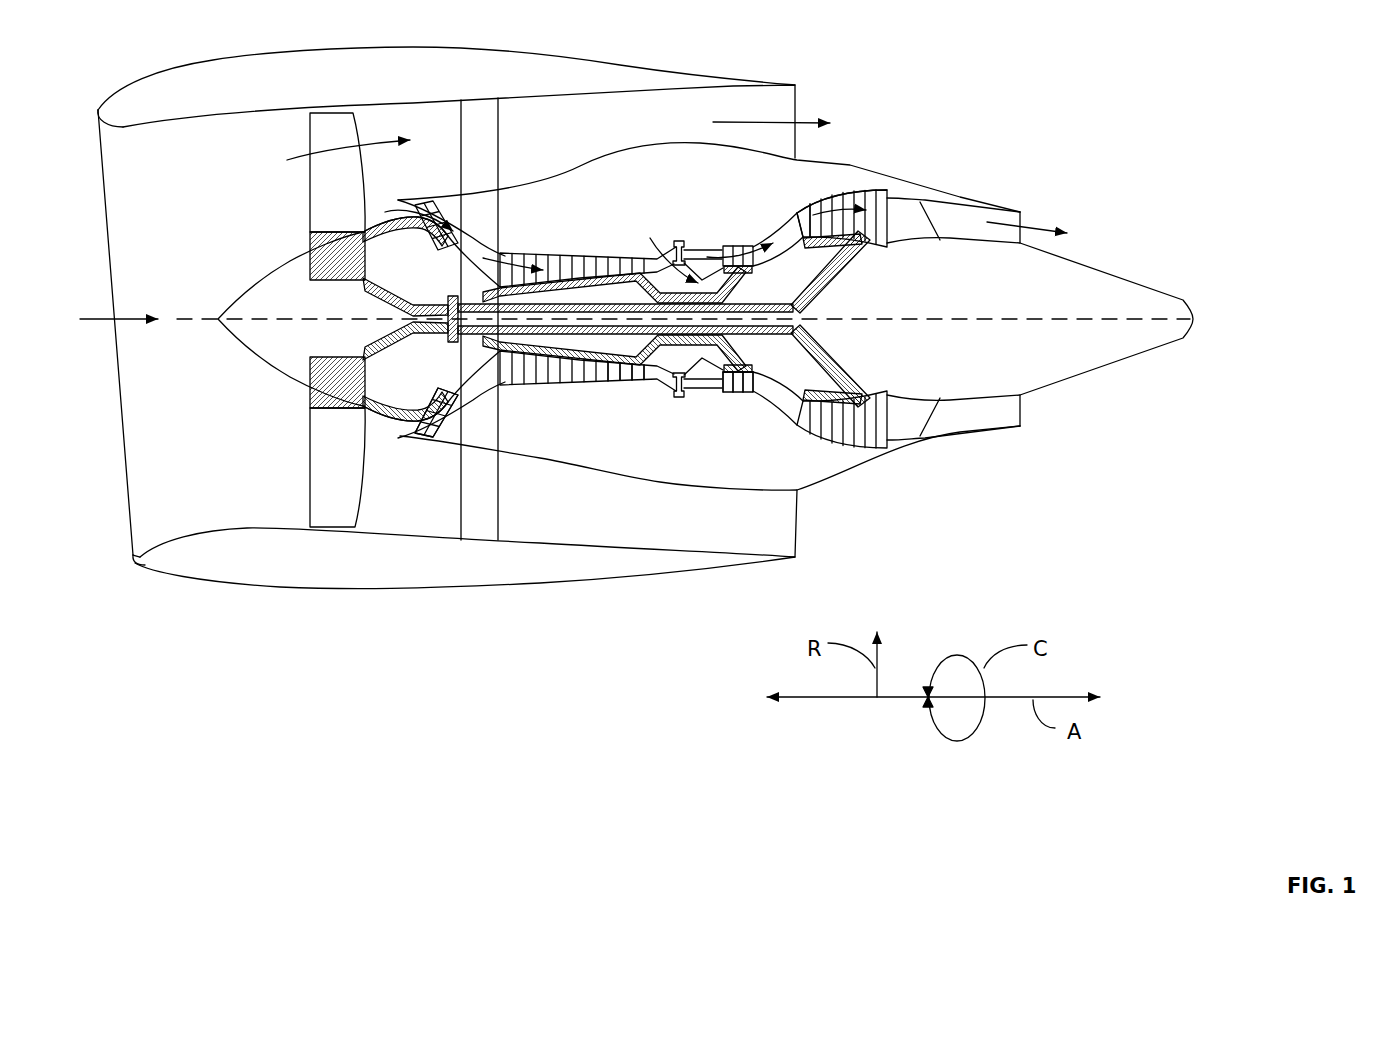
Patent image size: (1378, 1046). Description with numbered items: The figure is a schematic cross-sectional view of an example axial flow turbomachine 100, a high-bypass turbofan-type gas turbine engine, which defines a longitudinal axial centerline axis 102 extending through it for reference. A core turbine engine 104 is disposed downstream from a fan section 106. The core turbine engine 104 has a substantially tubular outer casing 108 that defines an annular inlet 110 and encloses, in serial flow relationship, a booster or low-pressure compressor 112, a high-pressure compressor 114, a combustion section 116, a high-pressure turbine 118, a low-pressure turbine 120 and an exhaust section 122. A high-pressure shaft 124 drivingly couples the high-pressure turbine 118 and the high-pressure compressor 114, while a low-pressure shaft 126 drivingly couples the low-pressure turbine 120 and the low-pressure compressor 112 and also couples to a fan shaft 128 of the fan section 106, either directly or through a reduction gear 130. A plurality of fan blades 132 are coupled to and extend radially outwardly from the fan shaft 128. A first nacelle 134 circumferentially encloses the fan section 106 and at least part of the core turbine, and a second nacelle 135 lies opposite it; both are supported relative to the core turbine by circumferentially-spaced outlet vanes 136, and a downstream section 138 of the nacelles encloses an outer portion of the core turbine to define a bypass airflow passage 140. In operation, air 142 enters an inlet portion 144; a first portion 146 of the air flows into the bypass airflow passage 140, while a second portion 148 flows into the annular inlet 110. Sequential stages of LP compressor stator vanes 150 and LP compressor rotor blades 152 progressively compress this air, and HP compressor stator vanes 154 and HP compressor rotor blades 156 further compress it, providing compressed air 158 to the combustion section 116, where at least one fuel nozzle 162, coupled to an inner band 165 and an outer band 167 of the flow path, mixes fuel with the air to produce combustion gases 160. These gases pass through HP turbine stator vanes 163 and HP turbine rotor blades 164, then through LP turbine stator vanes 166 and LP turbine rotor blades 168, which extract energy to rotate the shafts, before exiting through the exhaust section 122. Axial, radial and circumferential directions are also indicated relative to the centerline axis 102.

The axial flow turbomachine 100 is at (936, 53).
The axial centerline axis 102 is at (943, 317).
The core turbine engine 104 is at (625, 196).
The fan section 106 is at (232, 186).
The outer casing 108 is at (647, 480).
The annular inlet 110 is at (412, 426).
The low-pressure compressor 112 is at (458, 404).
The high-pressure compressor 114 is at (536, 392).
The combustion section 116 is at (694, 395).
The high-pressure turbine 118 is at (765, 377).
The low-pressure turbine 120 is at (881, 447).
The exhaust section 122 is at (1024, 217).
The high-pressure shaft 124 is at (760, 290).
The low-pressure shaft 126 is at (463, 303).
The fan shaft 128 is at (363, 280).
The reduction gear 130 is at (460, 347).
The fan blades 132 is at (310, 455).
The first nacelle 134 is at (352, 590).
The second nacelle 135 is at (364, 50).
The outlet vanes 136 is at (500, 133).
The downstream section 138 is at (702, 56).
The bypass airflow passage 140 is at (645, 135).
The air 142 is at (123, 318).
The inlet portion 144 is at (130, 530).
The first portion of air 146 is at (328, 150).
The second portion of air 148 is at (385, 211).
The LP compressor stator vanes 150 is at (425, 430).
The LP compressor rotor blades 152 is at (440, 434).
The HP compressor stator vanes 154 is at (624, 380).
The HP compressor rotor blades 156 is at (635, 385).
The compressed air 158 is at (663, 249).
The combustion gases 160 is at (737, 247).
The fuel nozzle 162 is at (738, 393).
The HP turbine stator vanes 163 is at (753, 397).
The HP turbine rotor blades 164 is at (741, 366).
The inner band 165 is at (728, 384).
The LP turbine stator vanes 166 is at (797, 212).
The outer band 167 is at (733, 397).
The LP turbine rotor blades 168 is at (805, 198).